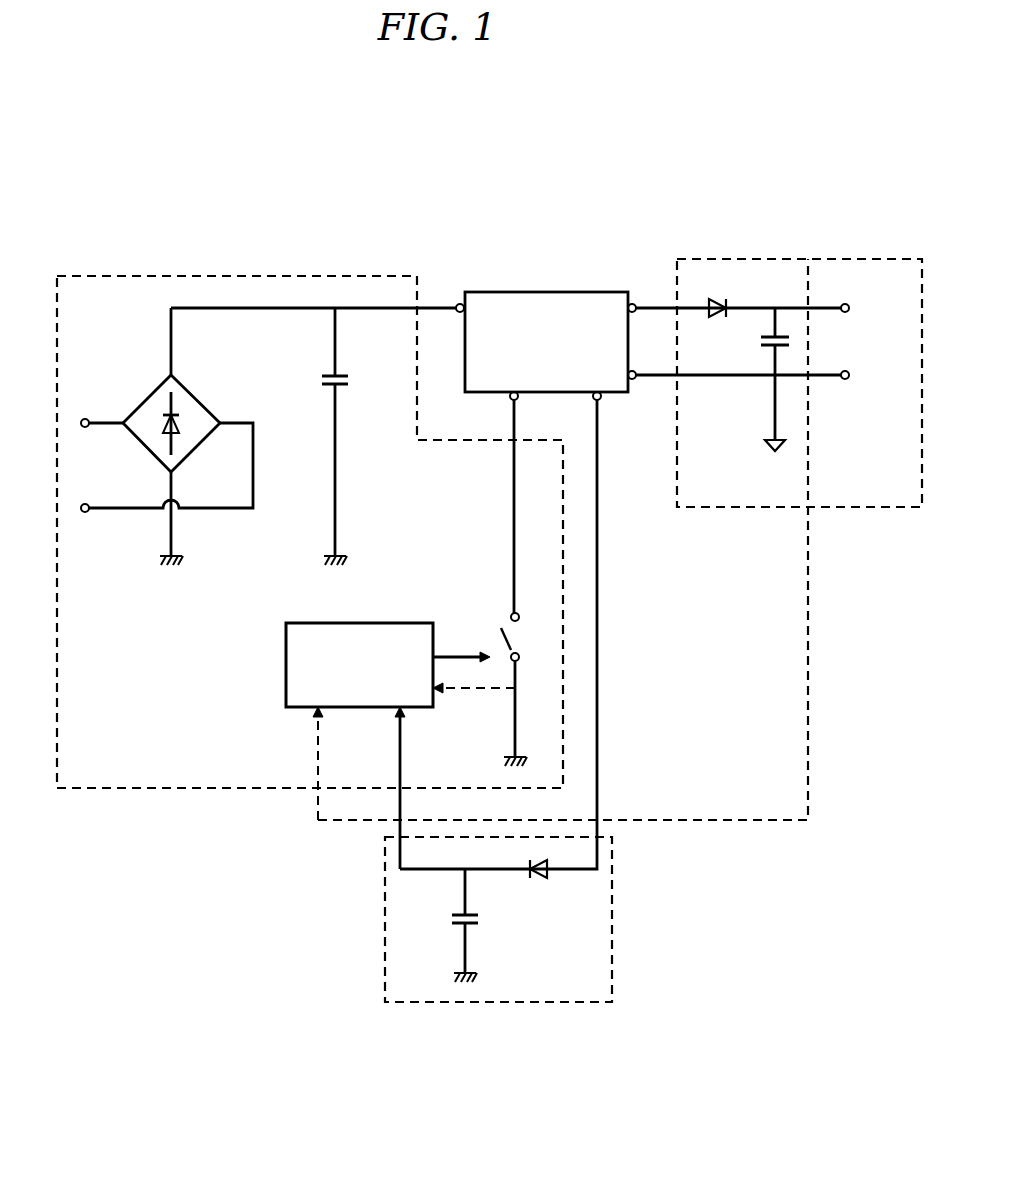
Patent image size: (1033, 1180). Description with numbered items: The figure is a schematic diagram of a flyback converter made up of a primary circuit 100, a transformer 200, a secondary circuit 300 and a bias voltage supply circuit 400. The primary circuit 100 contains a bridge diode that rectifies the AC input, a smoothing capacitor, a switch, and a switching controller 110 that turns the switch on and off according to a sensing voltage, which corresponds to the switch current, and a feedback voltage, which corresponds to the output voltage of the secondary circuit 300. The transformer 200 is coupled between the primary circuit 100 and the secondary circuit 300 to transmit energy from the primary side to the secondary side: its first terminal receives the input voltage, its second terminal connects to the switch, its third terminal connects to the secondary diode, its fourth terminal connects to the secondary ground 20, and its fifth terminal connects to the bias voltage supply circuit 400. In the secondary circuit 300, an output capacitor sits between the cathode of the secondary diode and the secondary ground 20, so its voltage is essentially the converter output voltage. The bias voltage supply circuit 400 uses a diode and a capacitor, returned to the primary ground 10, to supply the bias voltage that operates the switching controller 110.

The primary circuit 100 is at (235, 276).
The primary ground 10 is at (167, 568).
The switching controller 110 is at (286, 662).
The transformer 200 is at (554, 292).
The secondary circuit 300 is at (800, 259).
The secondary ground 20 is at (772, 450).
The bias voltage supply circuit 400 is at (612, 918).